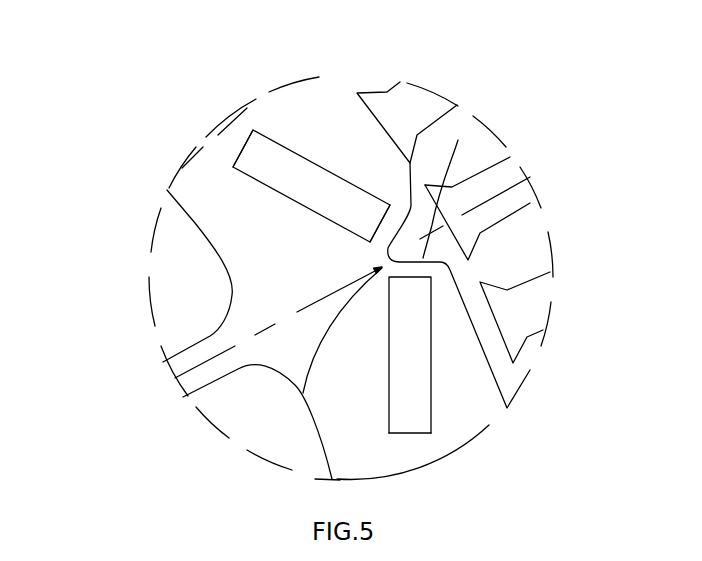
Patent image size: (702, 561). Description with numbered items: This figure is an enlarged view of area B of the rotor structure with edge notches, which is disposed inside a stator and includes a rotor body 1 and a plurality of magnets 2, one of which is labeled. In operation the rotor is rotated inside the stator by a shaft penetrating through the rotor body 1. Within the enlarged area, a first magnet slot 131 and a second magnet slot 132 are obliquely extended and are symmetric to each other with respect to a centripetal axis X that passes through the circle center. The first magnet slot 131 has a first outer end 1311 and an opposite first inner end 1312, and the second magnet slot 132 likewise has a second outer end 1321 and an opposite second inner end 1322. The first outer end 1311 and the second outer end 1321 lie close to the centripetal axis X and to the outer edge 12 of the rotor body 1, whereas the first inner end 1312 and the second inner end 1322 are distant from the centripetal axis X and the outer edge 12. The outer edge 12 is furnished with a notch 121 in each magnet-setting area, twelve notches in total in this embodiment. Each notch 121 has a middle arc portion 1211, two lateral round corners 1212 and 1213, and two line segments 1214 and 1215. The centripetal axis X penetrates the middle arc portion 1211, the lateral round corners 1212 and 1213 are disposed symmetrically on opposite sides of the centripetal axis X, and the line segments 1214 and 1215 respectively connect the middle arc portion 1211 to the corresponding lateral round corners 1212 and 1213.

The rotor body 1 is at (247, 231).
The magnets 2 is at (263, 158).
The area B is at (148, 307).
The centripetal axis X is at (532, 195).
The outer edge 12 is at (485, 356).
The notch 121 is at (248, 453).
The middle arc portion 1211 is at (372, 254).
The lateral round corner 1212 is at (426, 192).
The lateral round corner 1213 is at (455, 254).
The line segment 1214 is at (510, 157).
The line segment 1215 is at (400, 228).
The first magnet slot 131 is at (322, 167).
The first outer end 1311 is at (391, 182).
The first inner end 1312 is at (243, 131).
The second magnet slot 132 is at (516, 379).
The second outer end 1321 is at (442, 290).
The second inner end 1322 is at (416, 444).